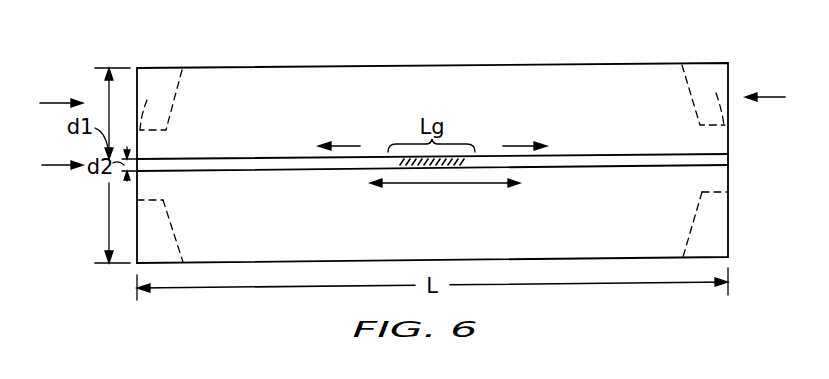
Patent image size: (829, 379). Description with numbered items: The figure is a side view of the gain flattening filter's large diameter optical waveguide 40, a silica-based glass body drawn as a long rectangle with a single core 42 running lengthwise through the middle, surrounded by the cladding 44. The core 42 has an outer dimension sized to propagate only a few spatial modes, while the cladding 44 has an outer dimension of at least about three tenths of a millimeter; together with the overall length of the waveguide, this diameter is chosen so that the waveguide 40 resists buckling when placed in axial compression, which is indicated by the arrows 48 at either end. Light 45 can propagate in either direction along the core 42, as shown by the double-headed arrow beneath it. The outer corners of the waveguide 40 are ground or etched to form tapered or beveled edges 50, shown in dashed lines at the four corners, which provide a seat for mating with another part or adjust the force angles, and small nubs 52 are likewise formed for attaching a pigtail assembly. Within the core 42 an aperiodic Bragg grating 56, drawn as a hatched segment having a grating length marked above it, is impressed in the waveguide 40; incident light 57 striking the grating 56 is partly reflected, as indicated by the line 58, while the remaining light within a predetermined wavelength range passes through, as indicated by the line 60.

The large diameter optical waveguide 40 is at (474, 64).
The core 42 is at (305, 157).
The cladding 44 is at (561, 112).
The light 45 is at (453, 184).
The arrows 48 is at (62, 103).
The tapered outer corners 50 is at (180, 86).
The nubs 52 is at (432, 102).
The aperiodic Bragg grating 56 is at (400, 171).
The incident light 57 is at (58, 167).
The reflected light line 58 is at (352, 146).
The transmitted light line 60 is at (513, 146).